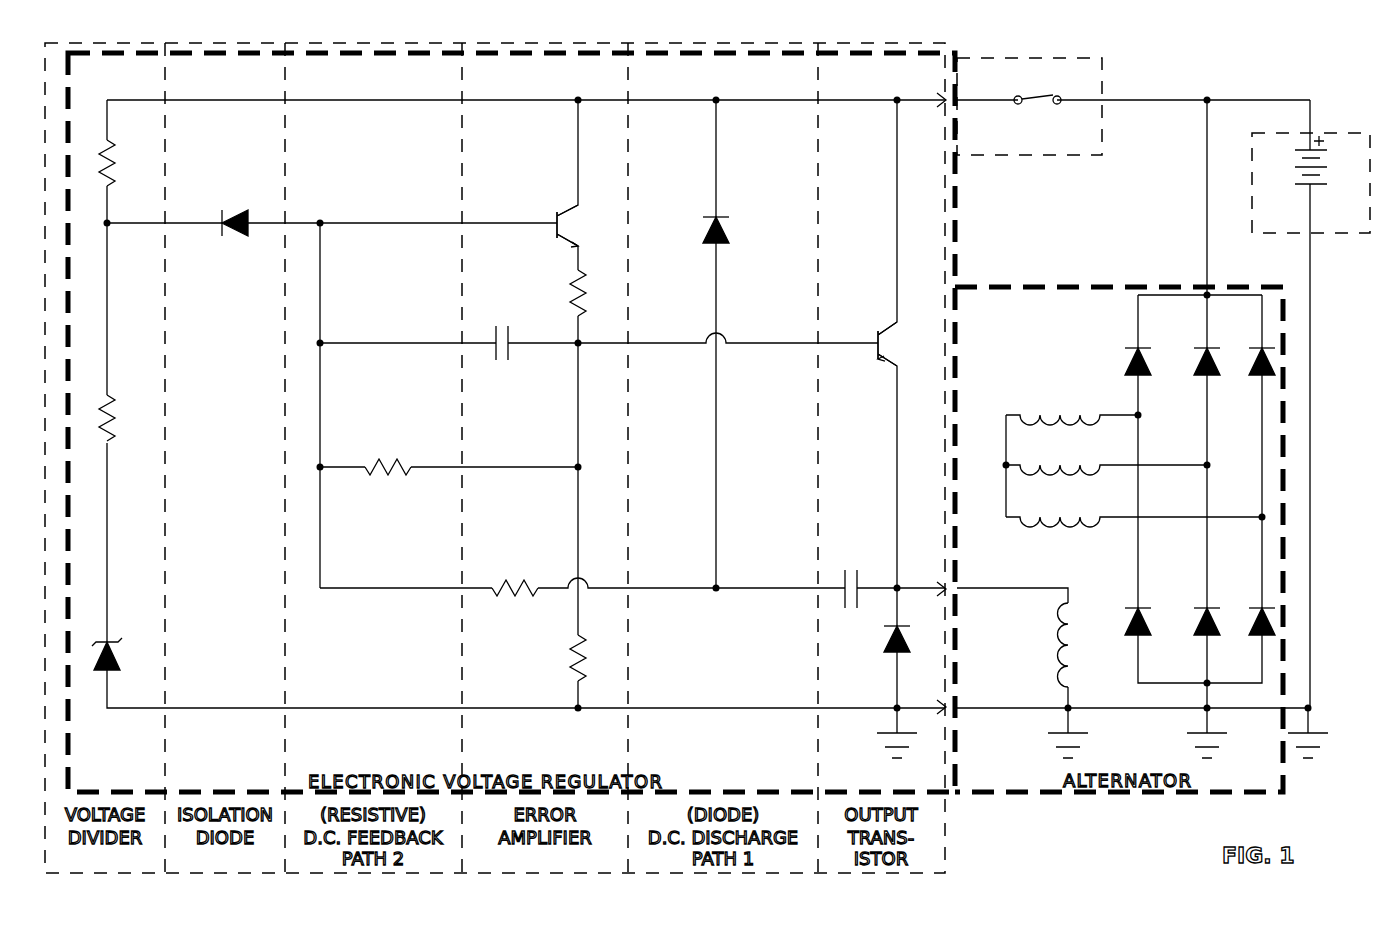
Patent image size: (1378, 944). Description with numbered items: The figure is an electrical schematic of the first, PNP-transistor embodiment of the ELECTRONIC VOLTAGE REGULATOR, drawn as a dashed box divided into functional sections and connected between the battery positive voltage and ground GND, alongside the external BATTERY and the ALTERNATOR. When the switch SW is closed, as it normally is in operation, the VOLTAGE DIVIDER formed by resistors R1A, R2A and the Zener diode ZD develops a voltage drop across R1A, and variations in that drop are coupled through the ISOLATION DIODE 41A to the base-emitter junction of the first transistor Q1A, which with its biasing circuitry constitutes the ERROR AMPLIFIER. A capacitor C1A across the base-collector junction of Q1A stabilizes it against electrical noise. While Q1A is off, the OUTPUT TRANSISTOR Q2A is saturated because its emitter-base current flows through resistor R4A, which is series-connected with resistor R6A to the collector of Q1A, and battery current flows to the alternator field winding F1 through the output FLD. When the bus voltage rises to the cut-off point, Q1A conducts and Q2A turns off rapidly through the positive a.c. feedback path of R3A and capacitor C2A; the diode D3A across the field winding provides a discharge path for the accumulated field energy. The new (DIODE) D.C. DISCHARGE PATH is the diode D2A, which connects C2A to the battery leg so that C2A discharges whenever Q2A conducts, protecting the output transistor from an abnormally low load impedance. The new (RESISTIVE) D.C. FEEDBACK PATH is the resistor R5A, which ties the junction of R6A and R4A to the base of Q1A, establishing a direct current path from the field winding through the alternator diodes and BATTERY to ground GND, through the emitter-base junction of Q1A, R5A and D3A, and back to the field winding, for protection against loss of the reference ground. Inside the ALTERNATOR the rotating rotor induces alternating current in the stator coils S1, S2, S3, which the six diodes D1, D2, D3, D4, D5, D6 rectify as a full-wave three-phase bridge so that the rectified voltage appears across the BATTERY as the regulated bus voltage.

The voltage divider resistor R1A is at (116, 151).
The voltage divider resistor R2A is at (123, 411).
The isolation diode 41A is at (224, 214).
The zener diode ZD is at (118, 665).
The first bipolar transistor Q1A is at (576, 216).
The first resistor R6A is at (584, 300).
The capacitor C1A is at (511, 330).
The diode D2A is at (726, 227).
The output transistor Q2A is at (886, 347).
The third resistor R5A is at (382, 466).
The resistor R3A is at (514, 584).
The second resistor R4A is at (552, 652).
The capacitor C2A is at (860, 569).
The diode D3A is at (882, 640).
The output voltage FLD is at (980, 605).
The ground GND is at (983, 728).
The switch SW is at (1029, 106).
The battery BATTERY is at (1311, 404).
The alternator rectifier diode D1 is at (1118, 357).
The alternator rectifier diode D2 is at (1188, 357).
The alternator rectifier diode D3 is at (1248, 360).
The alternator rectifier diode D4 is at (1124, 616).
The alternator rectifier diode D5 is at (1192, 624).
The alternator rectifier diode D6 is at (1248, 626).
The stator coil S1 is at (1064, 410).
The stator coil S2 is at (1070, 462).
The stator coil S3 is at (1076, 514).
The field winding F1 is at (1052, 640).